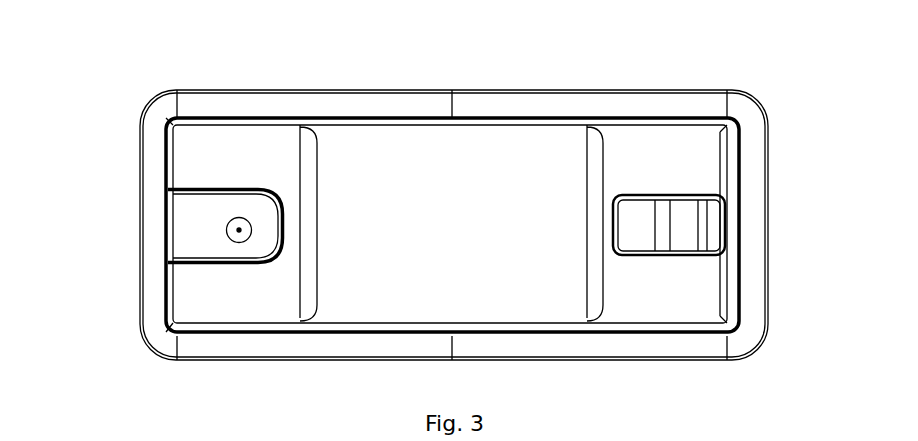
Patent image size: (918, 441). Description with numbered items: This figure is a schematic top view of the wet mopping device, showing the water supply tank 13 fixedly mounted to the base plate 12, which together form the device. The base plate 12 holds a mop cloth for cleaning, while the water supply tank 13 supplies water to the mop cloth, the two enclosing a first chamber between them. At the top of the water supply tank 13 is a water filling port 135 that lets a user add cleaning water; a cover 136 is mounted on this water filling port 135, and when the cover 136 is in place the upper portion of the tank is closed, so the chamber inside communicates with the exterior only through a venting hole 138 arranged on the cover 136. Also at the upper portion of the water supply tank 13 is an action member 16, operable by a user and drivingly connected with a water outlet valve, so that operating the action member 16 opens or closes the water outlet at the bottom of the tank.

The base plate 12 is at (148, 247).
The water supply tank 13 is at (197, 163).
The water filling port 135 is at (232, 185).
The cover 136 is at (263, 210).
The venting hole 138 is at (239, 230).
The action member 16 is at (705, 226).